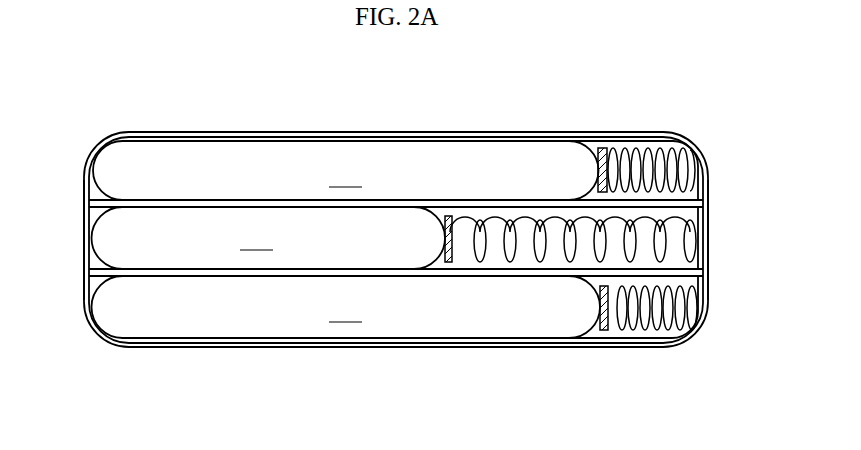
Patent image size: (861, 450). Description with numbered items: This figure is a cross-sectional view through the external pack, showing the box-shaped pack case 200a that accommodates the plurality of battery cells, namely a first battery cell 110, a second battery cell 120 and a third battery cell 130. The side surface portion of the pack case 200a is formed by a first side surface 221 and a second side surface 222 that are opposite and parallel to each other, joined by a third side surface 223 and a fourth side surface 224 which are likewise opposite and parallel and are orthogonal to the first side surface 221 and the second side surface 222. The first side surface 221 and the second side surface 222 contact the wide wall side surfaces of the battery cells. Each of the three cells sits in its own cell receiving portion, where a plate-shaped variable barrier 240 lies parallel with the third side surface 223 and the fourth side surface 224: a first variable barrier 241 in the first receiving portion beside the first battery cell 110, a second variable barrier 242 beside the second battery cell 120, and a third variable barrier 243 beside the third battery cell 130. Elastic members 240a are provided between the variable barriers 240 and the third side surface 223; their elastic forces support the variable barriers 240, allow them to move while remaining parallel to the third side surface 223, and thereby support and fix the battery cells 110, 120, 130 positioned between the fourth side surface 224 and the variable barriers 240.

The pack case 200a is at (101, 141).
The first side surface 221 is at (240, 136).
The second side surface 222 is at (268, 344).
The third side surface 223 is at (703, 287).
The fourth side surface 224 is at (88, 231).
The first battery cell 110 is at (395, 170).
The second battery cell 120 is at (395, 238).
The third battery cell 130 is at (394, 307).
The variable barriers 240 is at (571, 183).
The first variable barrier 241 is at (600, 147).
The second variable barrier 242 is at (448, 216).
The third variable barrier 243 is at (603, 285).
The elastic members 240a is at (685, 173).